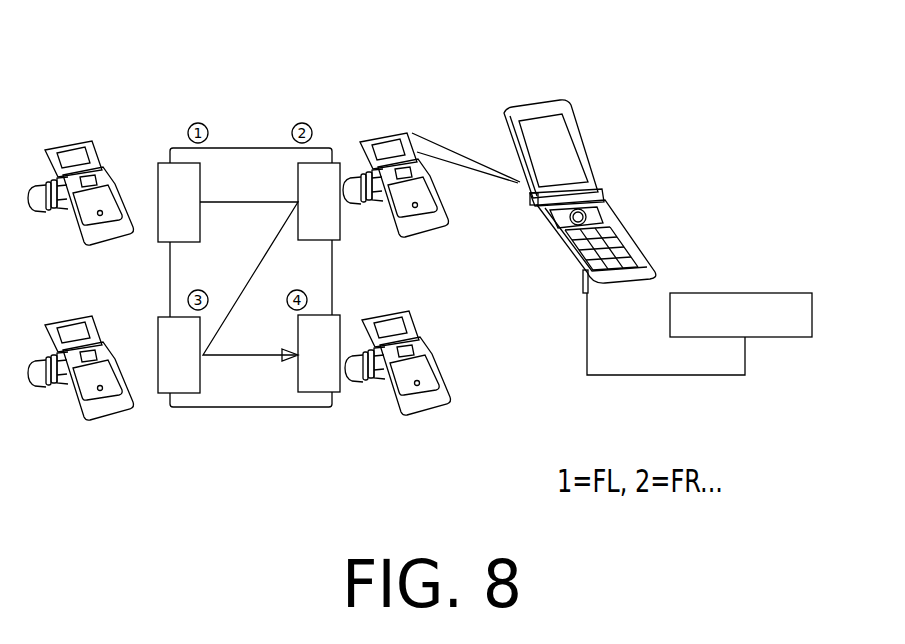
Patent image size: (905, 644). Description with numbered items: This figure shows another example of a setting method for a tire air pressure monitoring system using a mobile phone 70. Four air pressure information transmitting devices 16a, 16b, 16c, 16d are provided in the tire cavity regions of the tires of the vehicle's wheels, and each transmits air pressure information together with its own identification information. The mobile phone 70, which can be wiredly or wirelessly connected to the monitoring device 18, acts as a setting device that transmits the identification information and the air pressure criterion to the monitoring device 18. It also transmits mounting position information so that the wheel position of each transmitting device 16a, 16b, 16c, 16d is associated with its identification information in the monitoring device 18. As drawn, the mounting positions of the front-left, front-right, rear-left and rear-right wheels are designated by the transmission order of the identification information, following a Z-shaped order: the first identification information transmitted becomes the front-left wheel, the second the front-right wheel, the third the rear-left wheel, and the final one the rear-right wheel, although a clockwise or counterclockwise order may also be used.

The air pressure information transmitting device 16a is at (81, 166).
The air pressure information transmitting device 16b is at (396, 158).
The air pressure information transmitting device 16c is at (81, 341).
The air pressure information transmitting device 16d is at (398, 336).
The mobile phone 70 is at (561, 82).
The monitoring device 18 is at (745, 292).